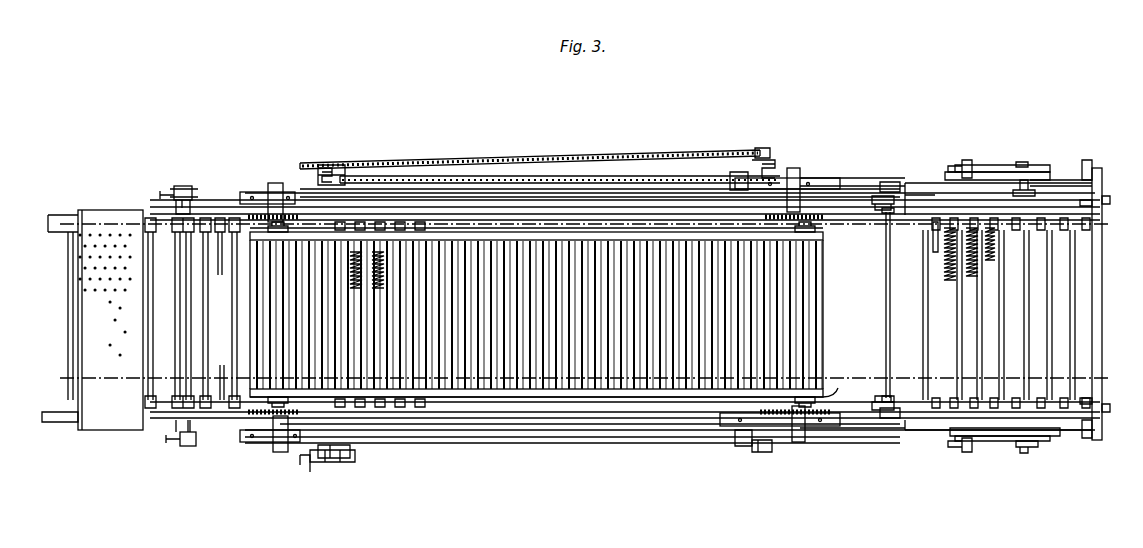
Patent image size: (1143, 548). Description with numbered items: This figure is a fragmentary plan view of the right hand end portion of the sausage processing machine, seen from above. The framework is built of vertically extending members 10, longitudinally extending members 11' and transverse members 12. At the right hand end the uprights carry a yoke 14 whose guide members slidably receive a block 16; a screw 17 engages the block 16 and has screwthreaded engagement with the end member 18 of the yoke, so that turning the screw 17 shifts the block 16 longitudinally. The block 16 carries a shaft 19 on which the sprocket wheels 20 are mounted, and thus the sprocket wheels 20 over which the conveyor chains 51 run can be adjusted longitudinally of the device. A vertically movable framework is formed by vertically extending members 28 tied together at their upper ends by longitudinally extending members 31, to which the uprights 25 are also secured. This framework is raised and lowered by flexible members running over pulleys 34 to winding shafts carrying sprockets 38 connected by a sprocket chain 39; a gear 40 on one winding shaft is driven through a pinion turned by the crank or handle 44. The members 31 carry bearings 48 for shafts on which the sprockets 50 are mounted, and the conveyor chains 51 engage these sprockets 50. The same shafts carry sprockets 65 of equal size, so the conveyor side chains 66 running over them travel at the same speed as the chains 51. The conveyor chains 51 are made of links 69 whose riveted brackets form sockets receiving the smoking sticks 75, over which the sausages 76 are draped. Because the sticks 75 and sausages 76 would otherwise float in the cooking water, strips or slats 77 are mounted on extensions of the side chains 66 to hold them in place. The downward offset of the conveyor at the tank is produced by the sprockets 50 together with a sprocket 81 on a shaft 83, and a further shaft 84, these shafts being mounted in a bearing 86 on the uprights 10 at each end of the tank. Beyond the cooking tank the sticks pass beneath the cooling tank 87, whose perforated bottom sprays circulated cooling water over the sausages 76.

The vertically extending members 10 is at (180, 186).
The longitudinally extending members 11' is at (998, 300).
The transverse members 12 is at (1098, 302).
The yoke 14 is at (1000, 172).
The block 16 is at (1030, 188).
The screw 17 is at (990, 172).
The end member 18 is at (968, 160).
The shaft 19 is at (1062, 182).
The sprocket wheels 20 is at (1082, 198).
The vertically extending member 25 is at (540, 178).
The vertically extending members 28 is at (350, 180).
The longitudinally extending members 31 is at (835, 184).
The pulleys 34 is at (758, 148).
The sprockets 38 is at (332, 166).
The sprocket chain 39 is at (622, 160).
The gear 40 is at (340, 462).
The crank or handle 44 is at (305, 462).
The bearings 48 is at (277, 183).
The sprockets 50 is at (255, 210).
The conveyor chains 51 is at (672, 214).
The sprockets 65 is at (832, 392).
The conveyor side chains 66 is at (620, 232).
The links 69 is at (372, 226).
The smoking sticks 75 is at (68, 322).
The sausages 76 is at (950, 282).
The strips or slats 77 is at (517, 378).
The sprocket 81 is at (878, 196).
The shaft 83 is at (886, 329).
The shaft 84 is at (185, 300).
The bearing 86 is at (192, 188).
The tank 87 is at (116, 418).